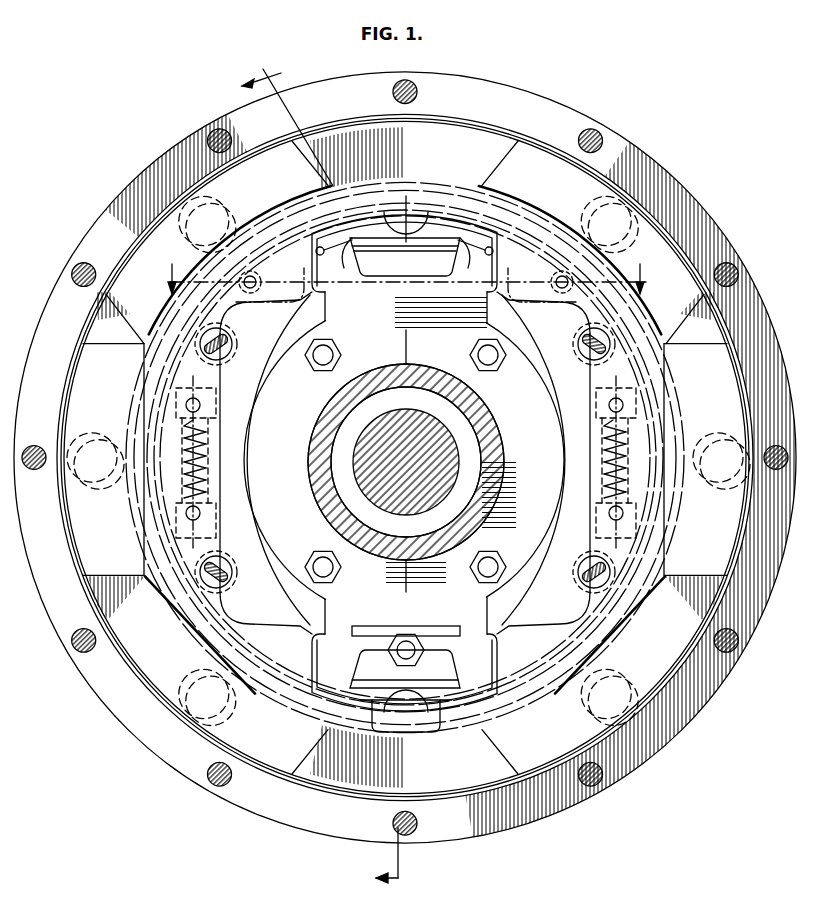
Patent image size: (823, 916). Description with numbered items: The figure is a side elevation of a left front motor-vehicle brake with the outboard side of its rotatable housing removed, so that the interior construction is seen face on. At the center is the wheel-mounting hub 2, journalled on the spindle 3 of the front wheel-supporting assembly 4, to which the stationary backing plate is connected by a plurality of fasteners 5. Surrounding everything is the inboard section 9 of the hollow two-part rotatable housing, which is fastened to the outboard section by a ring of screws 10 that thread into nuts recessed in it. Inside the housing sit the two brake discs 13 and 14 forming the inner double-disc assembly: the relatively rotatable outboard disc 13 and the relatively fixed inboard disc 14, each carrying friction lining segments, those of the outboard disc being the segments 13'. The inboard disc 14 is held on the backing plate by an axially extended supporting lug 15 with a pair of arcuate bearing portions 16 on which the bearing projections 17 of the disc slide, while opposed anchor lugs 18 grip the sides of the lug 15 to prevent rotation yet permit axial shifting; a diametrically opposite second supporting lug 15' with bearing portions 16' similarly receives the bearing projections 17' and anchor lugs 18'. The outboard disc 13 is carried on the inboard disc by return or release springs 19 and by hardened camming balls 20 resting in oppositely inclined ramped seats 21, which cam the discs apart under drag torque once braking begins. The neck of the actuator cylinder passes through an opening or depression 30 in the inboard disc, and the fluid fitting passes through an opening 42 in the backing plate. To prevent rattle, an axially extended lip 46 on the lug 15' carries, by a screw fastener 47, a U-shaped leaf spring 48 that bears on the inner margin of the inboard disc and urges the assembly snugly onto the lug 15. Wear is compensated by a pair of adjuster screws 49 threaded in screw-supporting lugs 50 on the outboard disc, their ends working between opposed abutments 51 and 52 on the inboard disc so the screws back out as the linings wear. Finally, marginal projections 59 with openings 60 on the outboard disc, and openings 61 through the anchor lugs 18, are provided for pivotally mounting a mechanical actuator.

The wheel-mounting hub 2 is at (492, 396).
The spindle 3 is at (414, 443).
The front wheel-supporting assembly 4 is at (400, 458).
The fasteners 5 is at (342, 354).
The inboard section 9 is at (540, 106).
The screws 10 is at (411, 77).
The brake disc 13 is at (405, 457).
The friction lining material segments 13' is at (405, 471).
The brake disc 14 is at (234, 582).
The supporting lug 15 is at (422, 305).
The second supporting lug 15' is at (347, 618).
The arcuate bearing portions 16 is at (405, 257).
The bearing portions 16' is at (400, 666).
The bearing projections 17 is at (406, 232).
The bearing projections 17' is at (406, 703).
The anchor lugs 18 is at (404, 253).
The anchor lugs 18' is at (432, 657).
The return or release springs 19 is at (262, 540).
The camming balls 20 is at (672, 178).
The ramped seats 21 is at (600, 186).
The opening or depression 30 is at (412, 204).
The opening 42 is at (472, 194).
The axially extended lip 46 is at (420, 636).
The screw fastener 47 is at (396, 628).
The U-shaped leaf spring 48 is at (418, 708).
The adjuster screws 49 is at (214, 466).
The screw-supporting lugs 50 is at (212, 432).
The abutment 51 is at (220, 518).
The abutment 52 is at (176, 392).
The marginal projections 59 is at (280, 314).
The opening 60 is at (406, 285).
The openings 61 is at (406, 272).